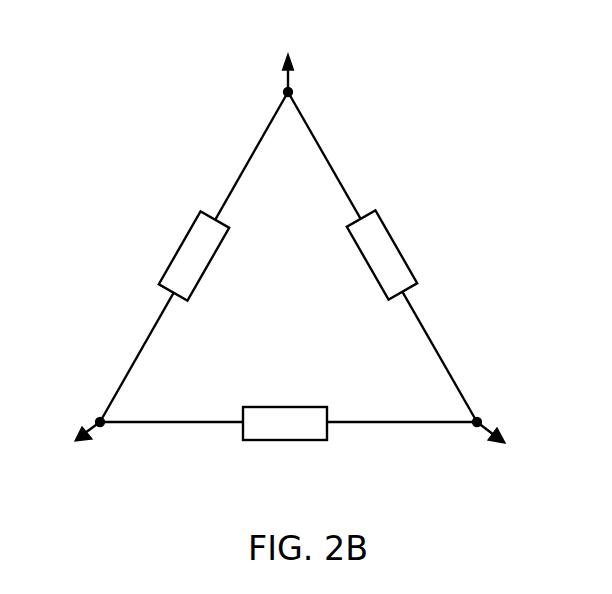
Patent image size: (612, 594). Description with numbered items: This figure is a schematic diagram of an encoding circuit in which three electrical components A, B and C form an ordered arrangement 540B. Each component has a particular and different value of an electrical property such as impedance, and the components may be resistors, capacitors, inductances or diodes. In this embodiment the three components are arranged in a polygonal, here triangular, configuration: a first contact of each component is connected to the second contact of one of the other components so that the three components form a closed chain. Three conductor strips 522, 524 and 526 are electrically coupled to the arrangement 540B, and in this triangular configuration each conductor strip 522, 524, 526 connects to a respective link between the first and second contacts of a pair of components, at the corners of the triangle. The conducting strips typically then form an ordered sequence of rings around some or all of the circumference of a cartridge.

The ordered arrangement 540B is at (143, 106).
The conductor strip 522 is at (280, 60).
The conductor strip 524 is at (515, 444).
The conductor strip 526 is at (65, 438).